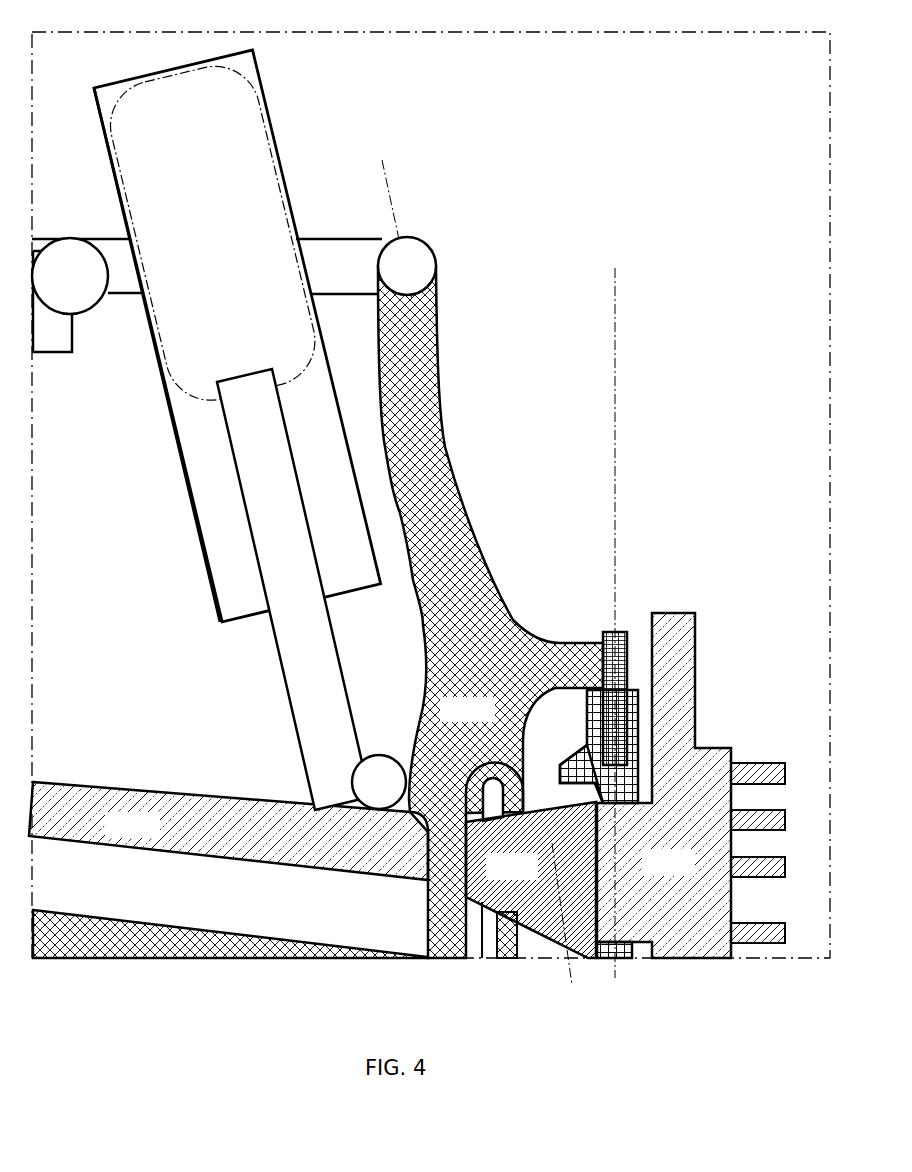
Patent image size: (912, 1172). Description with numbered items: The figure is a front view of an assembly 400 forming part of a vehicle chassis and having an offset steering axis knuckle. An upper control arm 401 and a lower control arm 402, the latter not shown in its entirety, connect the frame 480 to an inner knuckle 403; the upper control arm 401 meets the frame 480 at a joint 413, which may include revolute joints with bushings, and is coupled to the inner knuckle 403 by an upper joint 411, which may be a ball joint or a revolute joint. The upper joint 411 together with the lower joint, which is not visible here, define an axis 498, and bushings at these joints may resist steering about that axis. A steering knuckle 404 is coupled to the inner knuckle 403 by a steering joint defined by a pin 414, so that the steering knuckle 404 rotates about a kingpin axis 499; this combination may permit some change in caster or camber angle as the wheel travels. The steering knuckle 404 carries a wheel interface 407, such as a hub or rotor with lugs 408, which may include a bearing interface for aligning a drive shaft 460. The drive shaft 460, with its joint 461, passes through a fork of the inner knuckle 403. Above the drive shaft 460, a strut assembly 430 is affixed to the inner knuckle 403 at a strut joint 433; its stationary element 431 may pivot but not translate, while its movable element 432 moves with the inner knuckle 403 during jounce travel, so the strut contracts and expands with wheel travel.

The assembly 400 is at (598, 121).
The upper control arm 401 is at (347, 236).
The lower control arm 402 is at (153, 923).
The inner knuckle 403 is at (487, 719).
The steering knuckle 404 is at (563, 763).
The wheel interface 407 is at (690, 872).
The lugs 408 is at (762, 762).
The upper joint 411 is at (430, 248).
The joint 413 is at (60, 238).
The pin 414 is at (605, 633).
The strut assembly 430 is at (290, 141).
The stationary element 431 is at (177, 447).
The movable element 432 is at (250, 505).
The strut joint 433 is at (380, 756).
The drive shaft 460 is at (155, 834).
The joint 461 is at (532, 876).
The frame 480 is at (55, 356).
The axis 498 is at (384, 180).
The kingpin axis 499 is at (614, 512).